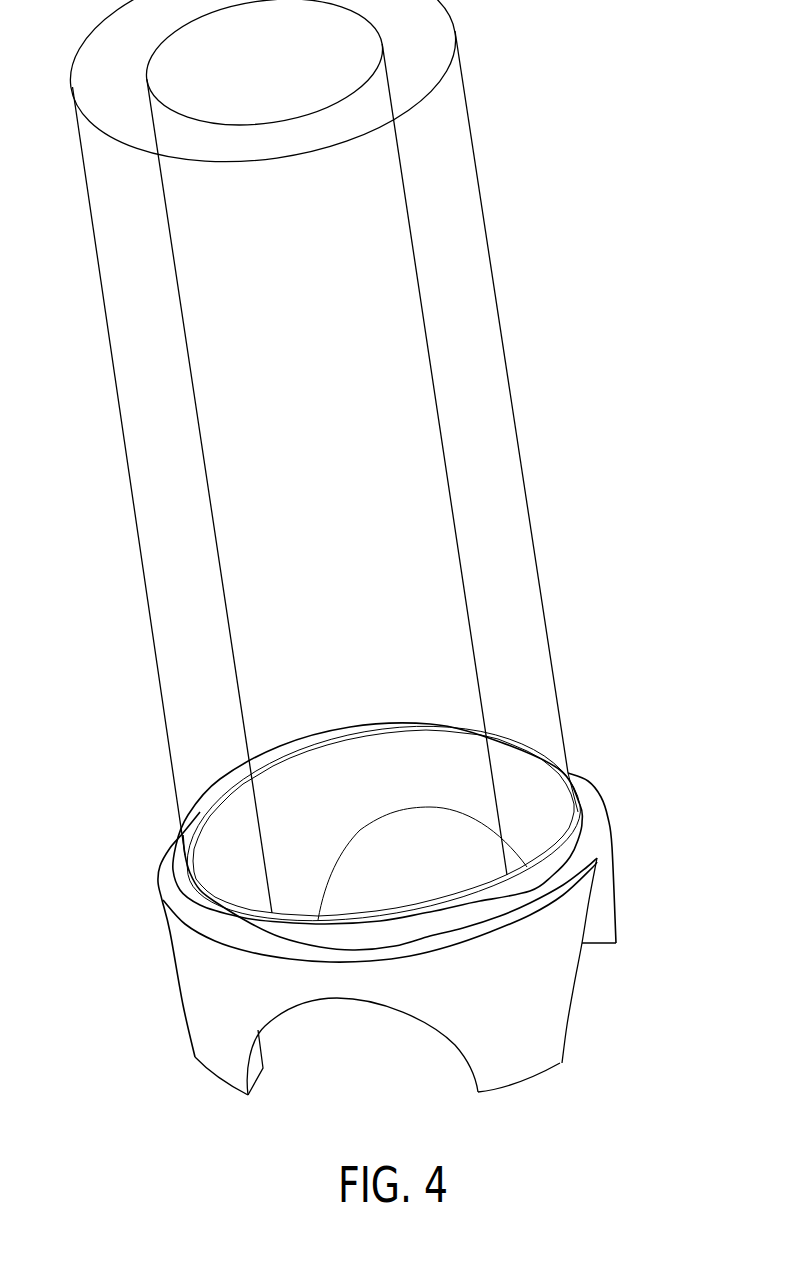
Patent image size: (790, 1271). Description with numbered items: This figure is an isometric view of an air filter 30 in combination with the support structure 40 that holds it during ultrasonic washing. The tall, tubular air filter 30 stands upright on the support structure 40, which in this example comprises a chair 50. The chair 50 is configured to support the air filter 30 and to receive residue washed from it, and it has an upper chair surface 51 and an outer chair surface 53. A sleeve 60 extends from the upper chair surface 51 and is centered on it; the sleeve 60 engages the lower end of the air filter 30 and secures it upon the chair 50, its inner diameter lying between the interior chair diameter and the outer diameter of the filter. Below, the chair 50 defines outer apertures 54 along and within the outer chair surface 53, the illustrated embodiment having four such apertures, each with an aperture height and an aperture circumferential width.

The air filter 30 is at (578, 166).
The support structure 40 is at (420, 875).
The chair 50 is at (600, 885).
The upper chair surface 51 is at (582, 864).
The outer chair surface 53 is at (552, 1036).
The outer apertures 54 is at (317, 1045).
The sleeve 60 is at (575, 828).